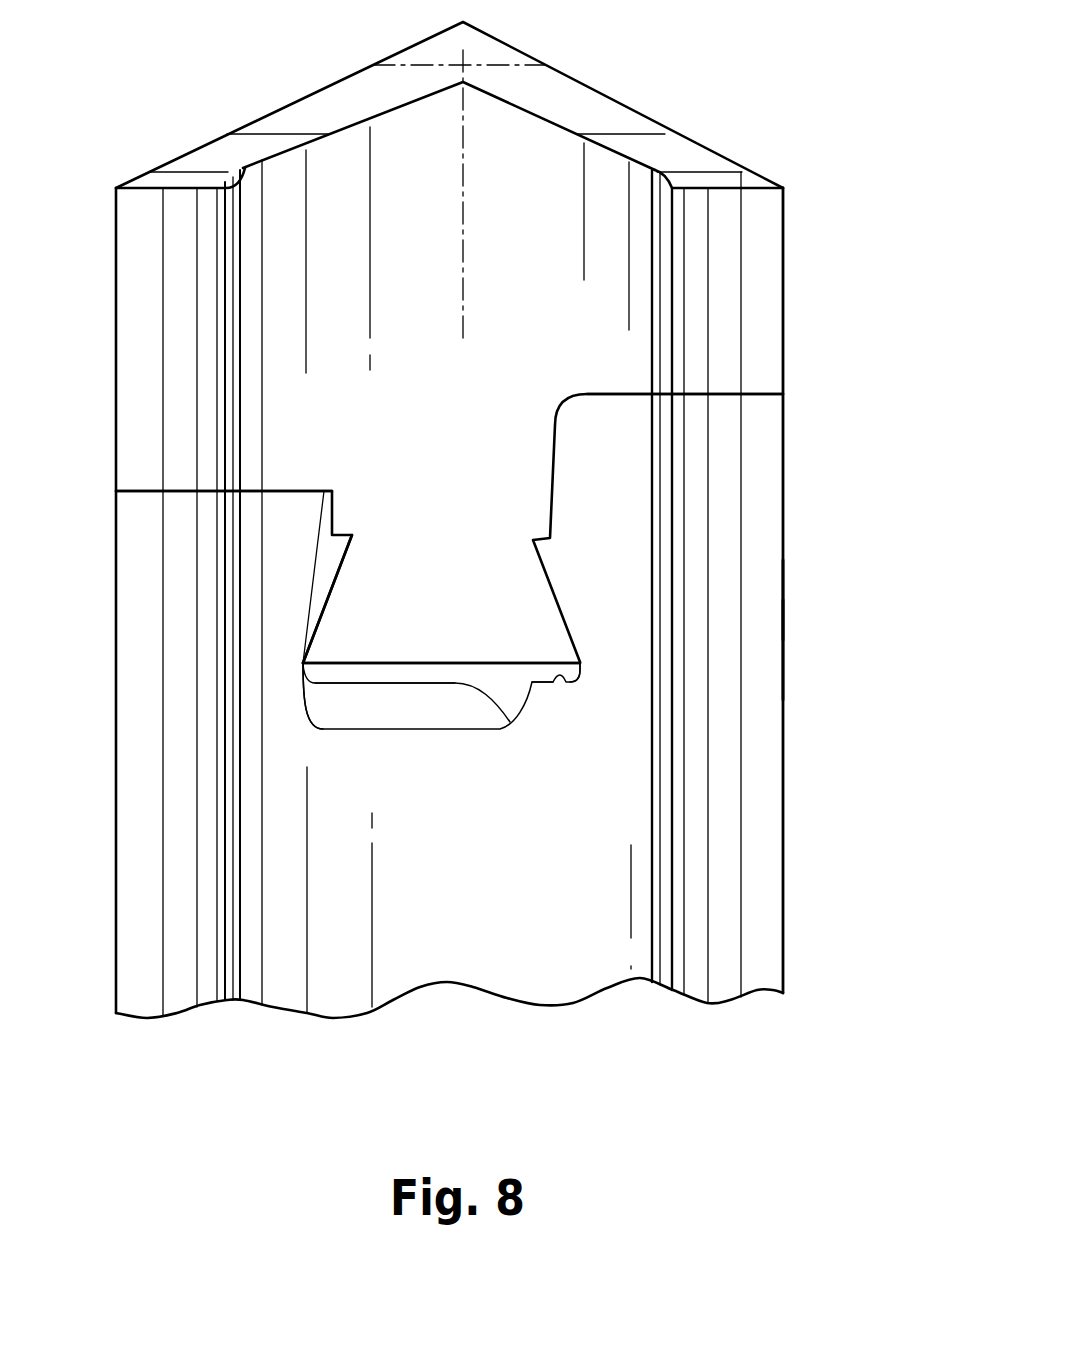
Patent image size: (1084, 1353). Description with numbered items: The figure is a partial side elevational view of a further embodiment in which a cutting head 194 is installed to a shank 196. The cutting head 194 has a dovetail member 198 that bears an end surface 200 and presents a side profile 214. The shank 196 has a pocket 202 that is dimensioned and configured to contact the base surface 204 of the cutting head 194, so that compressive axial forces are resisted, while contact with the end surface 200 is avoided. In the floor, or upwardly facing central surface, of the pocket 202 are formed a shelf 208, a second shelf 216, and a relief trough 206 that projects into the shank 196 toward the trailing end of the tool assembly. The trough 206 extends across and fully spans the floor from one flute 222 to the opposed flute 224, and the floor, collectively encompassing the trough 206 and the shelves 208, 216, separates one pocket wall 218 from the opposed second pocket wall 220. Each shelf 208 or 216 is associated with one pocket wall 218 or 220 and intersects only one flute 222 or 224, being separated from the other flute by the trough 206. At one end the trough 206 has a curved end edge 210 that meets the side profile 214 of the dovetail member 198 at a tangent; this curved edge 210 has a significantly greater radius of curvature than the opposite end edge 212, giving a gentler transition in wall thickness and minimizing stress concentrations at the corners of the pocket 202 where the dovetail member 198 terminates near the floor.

The cutting head 194 is at (732, 60).
The shank 196 is at (853, 733).
The dovetail member 198 is at (462, 579).
The end surface 200 is at (512, 665).
The pocket 202 is at (828, 492).
The base surface 204 is at (173, 492).
The relief trough 206 is at (422, 714).
The shelf 208 is at (566, 682).
The curved end edge 210 is at (312, 708).
The end edge 212 is at (560, 665).
The side profile 214 is at (322, 607).
The shelf 216 is at (363, 683).
The pocket wall 218 is at (284, 452).
The second pocket wall 220 is at (604, 366).
The flute 222 is at (437, 882).
The flute 224 is at (826, 619).